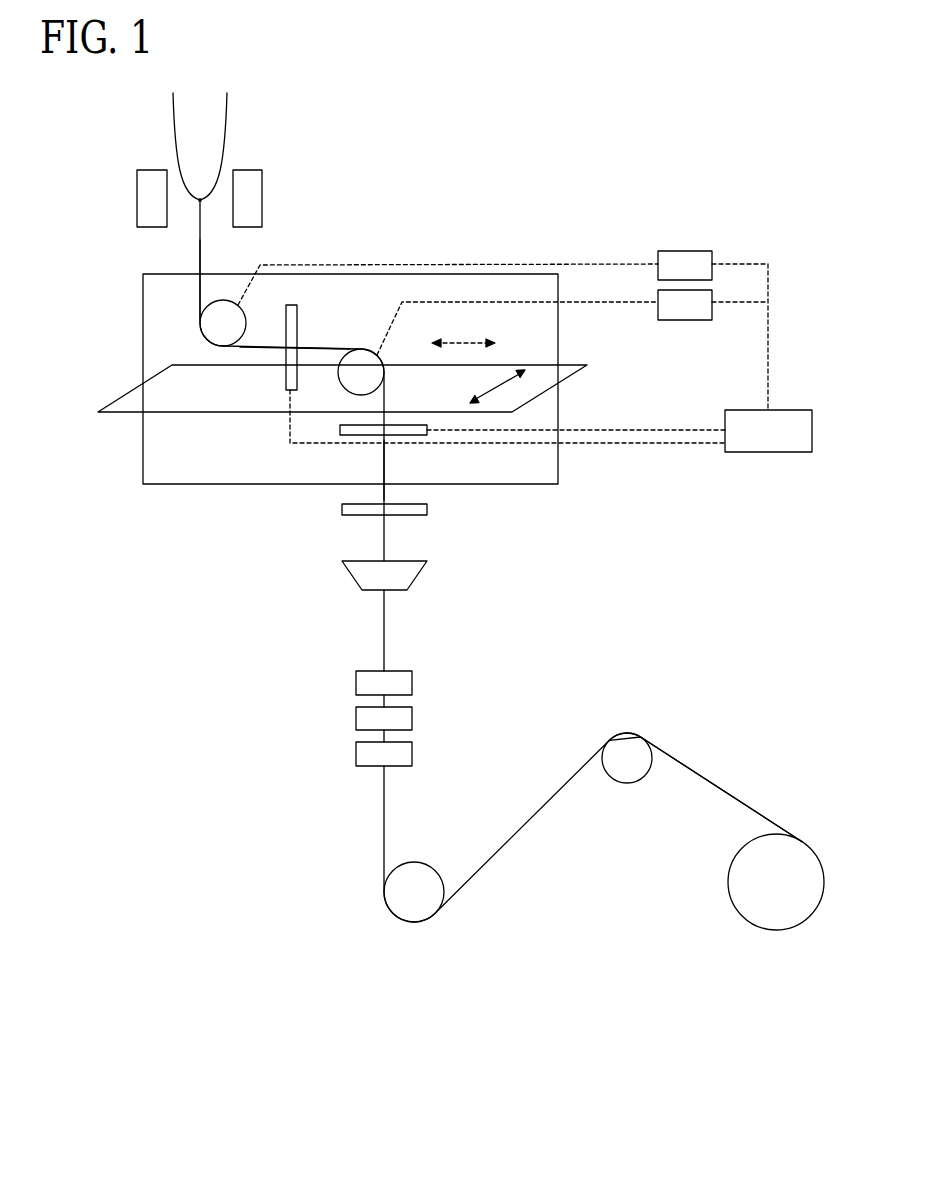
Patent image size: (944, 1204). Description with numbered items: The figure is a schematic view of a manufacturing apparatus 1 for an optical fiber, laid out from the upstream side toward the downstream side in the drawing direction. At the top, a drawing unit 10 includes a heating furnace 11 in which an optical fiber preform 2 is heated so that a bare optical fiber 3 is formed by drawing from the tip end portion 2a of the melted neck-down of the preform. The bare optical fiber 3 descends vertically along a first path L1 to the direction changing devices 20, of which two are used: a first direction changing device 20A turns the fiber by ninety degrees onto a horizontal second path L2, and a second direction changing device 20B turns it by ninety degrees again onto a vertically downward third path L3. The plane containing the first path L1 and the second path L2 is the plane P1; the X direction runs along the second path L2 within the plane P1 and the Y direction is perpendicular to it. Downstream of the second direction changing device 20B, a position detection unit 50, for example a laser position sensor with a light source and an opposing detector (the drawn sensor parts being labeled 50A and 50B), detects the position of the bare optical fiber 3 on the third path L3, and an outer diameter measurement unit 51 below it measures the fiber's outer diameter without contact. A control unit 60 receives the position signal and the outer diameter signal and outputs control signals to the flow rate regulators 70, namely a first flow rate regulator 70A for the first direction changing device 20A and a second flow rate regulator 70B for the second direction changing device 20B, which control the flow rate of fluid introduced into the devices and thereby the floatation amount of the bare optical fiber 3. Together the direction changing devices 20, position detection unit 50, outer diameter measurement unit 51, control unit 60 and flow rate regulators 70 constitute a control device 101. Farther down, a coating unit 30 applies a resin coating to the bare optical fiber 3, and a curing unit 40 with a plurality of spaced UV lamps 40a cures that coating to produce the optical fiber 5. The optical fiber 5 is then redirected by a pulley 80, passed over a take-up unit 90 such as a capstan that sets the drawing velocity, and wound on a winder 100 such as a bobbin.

The manufacturing apparatus 1 is at (562, 152).
The optical fiber preform 2 is at (227, 118).
The tip end portion 2a is at (202, 203).
The bare optical fiber 3 is at (199, 250).
The optical fiber 5 is at (720, 788).
The drawing unit 10 is at (126, 158).
The heating furnace 11 is at (137, 196).
The direction changing devices 20 is at (292, 291).
The first direction changing device 20A is at (247, 310).
The second direction changing device 20B is at (366, 349).
The coating unit 30 is at (350, 582).
The curing unit 40 is at (252, 663).
The UV lamps 40a is at (356, 681).
The position detection unit 50 is at (287, 393).
The first position sensor 50A is at (289, 392).
The second position sensor 50B is at (356, 437).
The outer diameter measurement unit 51 is at (342, 507).
The control unit 60 is at (790, 410).
The flow rate regulators 70 is at (743, 302).
The first flow rate regulator 70A is at (685, 251).
The second flow rate regulator 70B is at (685, 320).
The pulley 80 is at (412, 923).
The take-up unit 90 is at (627, 784).
The winder 100 is at (774, 930).
The control device 101 is at (690, 186).
The first path L1 is at (200, 300).
The second path L2 is at (313, 345).
The third path L3 is at (386, 465).
The plane P1 is at (558, 333).